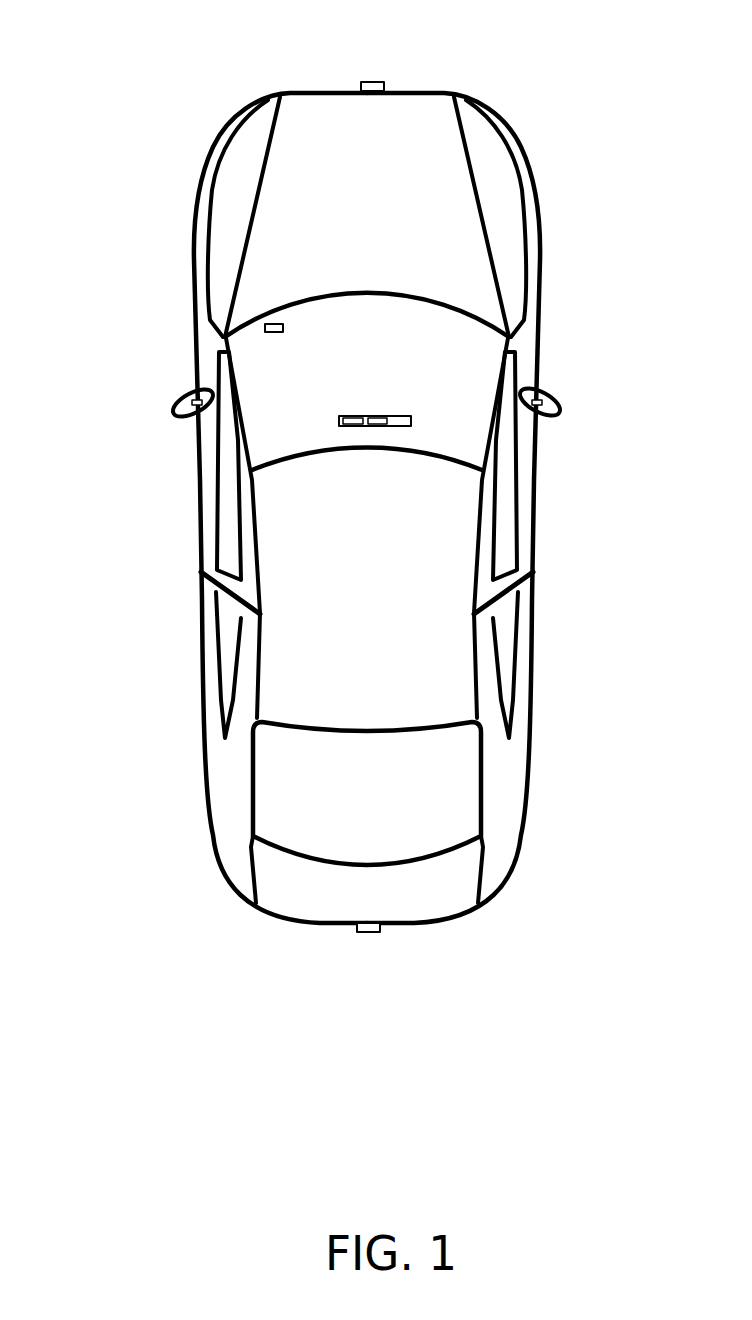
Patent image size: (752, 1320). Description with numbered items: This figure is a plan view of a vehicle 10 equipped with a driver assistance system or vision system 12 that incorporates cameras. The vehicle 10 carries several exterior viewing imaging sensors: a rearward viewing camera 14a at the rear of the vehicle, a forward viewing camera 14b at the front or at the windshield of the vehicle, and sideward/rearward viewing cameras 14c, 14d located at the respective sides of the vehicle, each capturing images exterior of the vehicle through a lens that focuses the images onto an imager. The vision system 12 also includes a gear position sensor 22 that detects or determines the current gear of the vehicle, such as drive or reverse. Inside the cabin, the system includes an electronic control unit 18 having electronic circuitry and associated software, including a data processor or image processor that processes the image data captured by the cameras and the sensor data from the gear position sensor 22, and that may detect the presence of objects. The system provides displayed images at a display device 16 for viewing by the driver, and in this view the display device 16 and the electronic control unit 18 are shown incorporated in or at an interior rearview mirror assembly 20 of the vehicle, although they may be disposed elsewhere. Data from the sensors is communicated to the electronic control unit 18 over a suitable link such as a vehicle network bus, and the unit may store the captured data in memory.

The vehicle 10 is at (129, 98).
The vision system 12 is at (322, 945).
The rearward viewing camera 14a is at (373, 932).
The forward viewing camera 14b is at (375, 82).
The sideward/rearward viewing camera 14c is at (180, 395).
The sideward/rearward viewing camera 14d is at (552, 397).
The display device 16 is at (353, 418).
The electronic control unit 18 is at (372, 415).
The interior rearview mirror assembly 20 is at (411, 416).
The gear position sensor 22 is at (283, 324).